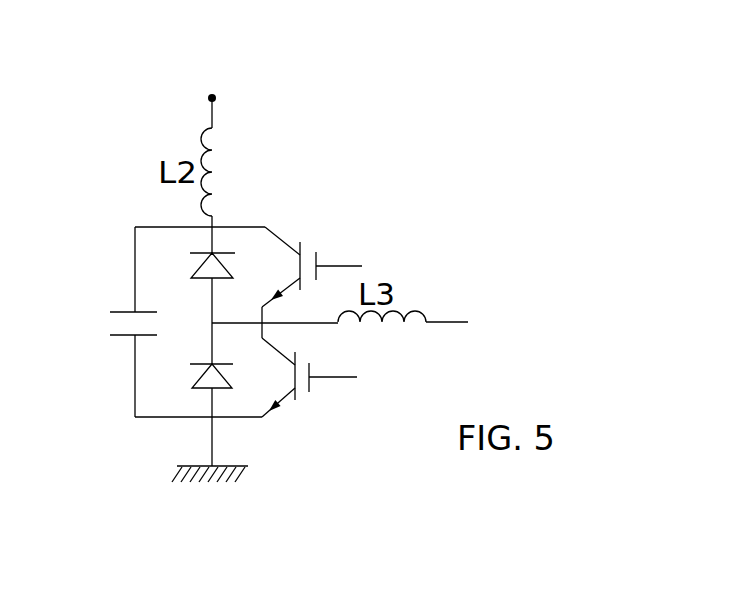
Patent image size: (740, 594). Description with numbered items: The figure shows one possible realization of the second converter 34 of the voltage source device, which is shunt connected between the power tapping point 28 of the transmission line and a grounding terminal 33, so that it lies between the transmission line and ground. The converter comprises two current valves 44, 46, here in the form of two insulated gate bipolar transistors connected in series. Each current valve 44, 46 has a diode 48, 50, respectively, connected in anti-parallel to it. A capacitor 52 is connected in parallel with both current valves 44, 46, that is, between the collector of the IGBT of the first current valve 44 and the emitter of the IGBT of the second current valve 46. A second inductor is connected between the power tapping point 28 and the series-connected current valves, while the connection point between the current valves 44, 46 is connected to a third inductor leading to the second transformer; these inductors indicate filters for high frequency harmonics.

The power tapping point 28 is at (209, 96).
The grounding terminal 33 is at (205, 458).
The second converter 34 is at (412, 234).
The first current valve 44 is at (312, 253).
The second current valve 46 is at (309, 392).
The diode 48 is at (192, 271).
The diode 50 is at (190, 379).
The capacitor 52 is at (107, 330).